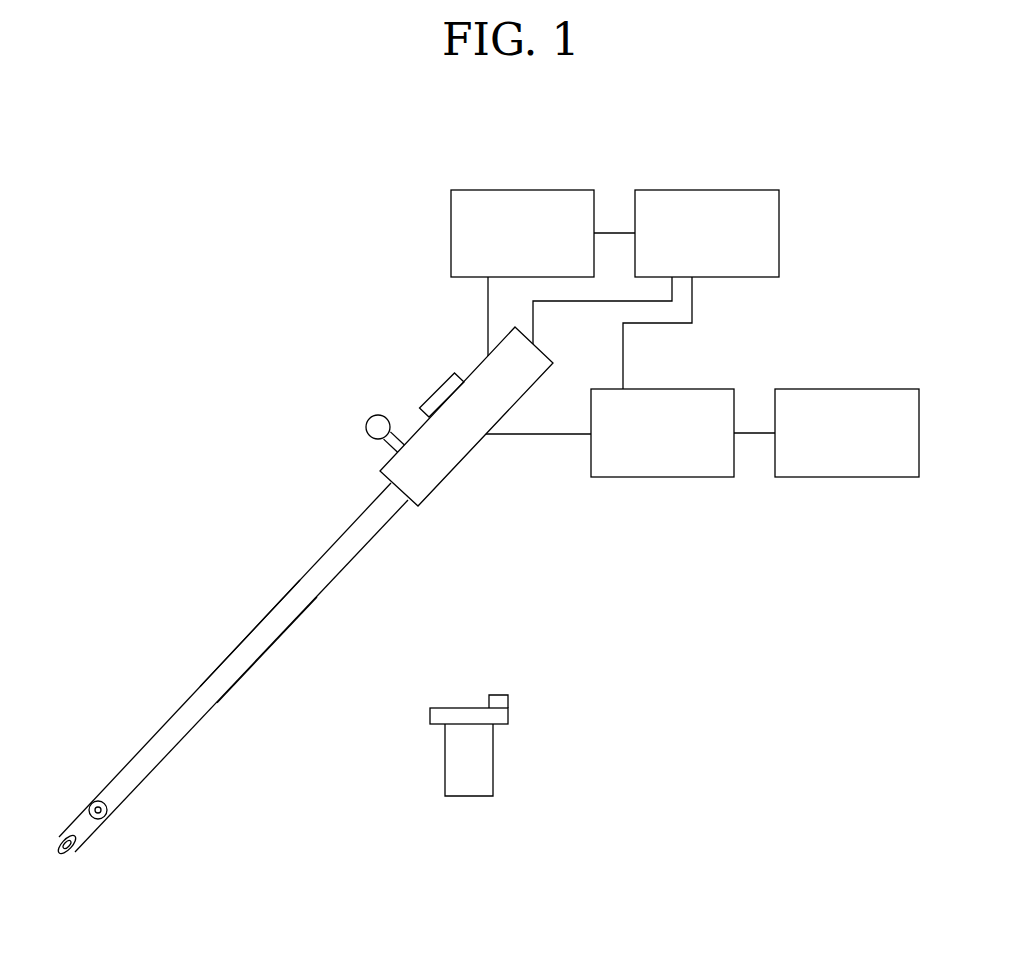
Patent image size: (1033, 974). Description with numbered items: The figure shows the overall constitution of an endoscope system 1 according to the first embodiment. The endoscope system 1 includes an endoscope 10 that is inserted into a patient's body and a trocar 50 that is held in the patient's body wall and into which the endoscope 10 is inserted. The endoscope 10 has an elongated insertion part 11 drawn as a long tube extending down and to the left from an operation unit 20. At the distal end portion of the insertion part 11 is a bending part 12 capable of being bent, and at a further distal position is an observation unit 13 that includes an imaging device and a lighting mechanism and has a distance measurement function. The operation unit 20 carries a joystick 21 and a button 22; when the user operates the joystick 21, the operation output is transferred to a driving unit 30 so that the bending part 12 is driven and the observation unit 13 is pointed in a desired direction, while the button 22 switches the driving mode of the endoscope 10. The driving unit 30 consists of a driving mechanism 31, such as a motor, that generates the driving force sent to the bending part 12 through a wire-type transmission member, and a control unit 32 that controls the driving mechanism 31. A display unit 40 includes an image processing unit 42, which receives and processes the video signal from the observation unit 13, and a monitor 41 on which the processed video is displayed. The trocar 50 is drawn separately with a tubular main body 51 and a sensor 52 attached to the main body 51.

The endoscope system 1 is at (190, 236).
The endoscope 10 is at (207, 517).
The insertion part 11 is at (243, 640).
The bending part 12 is at (100, 800).
The observation unit 13 is at (68, 857).
The operation unit 20 is at (373, 371).
The joystick 21 is at (366, 427).
The button 22 is at (438, 389).
The driving unit 30 is at (407, 228).
The driving mechanism 31 is at (523, 190).
The control unit 32 is at (707, 190).
The display unit 40 is at (778, 355).
The monitor 41 is at (828, 389).
The image processing unit 42 is at (663, 389).
The trocar 50 is at (406, 728).
The main body 51 is at (486, 758).
The sensor 52 is at (500, 695).